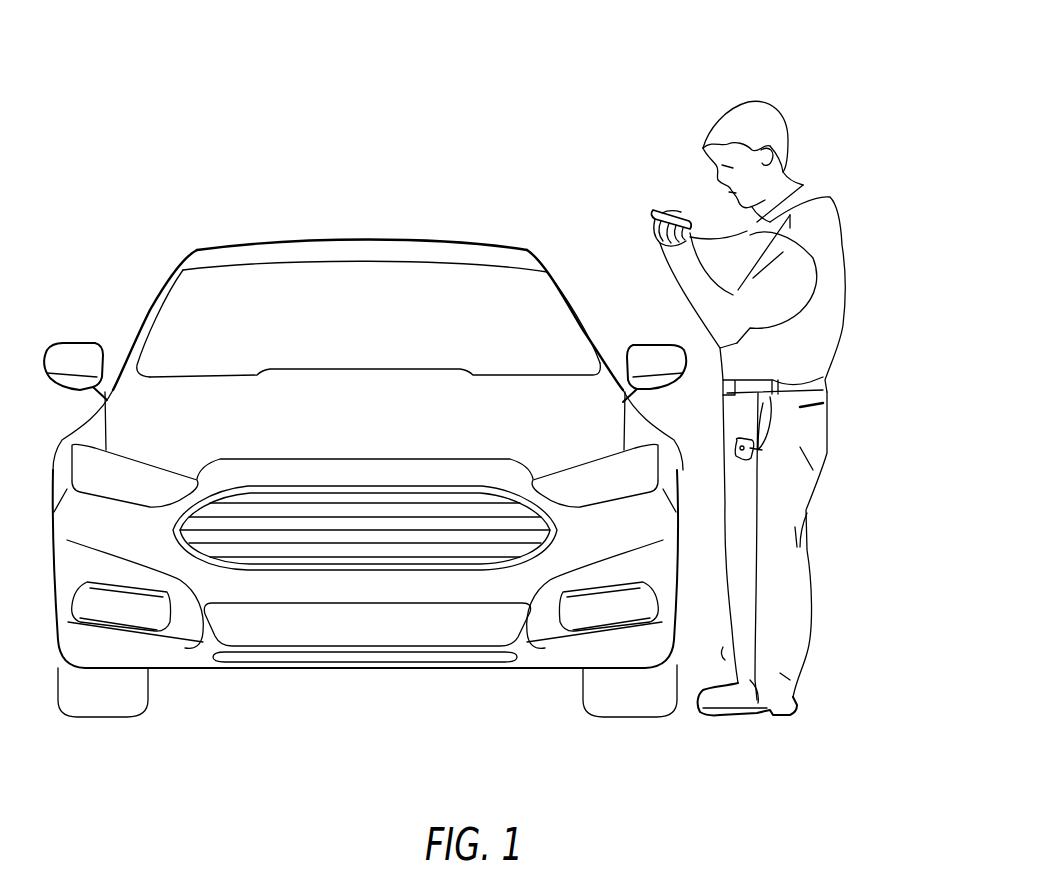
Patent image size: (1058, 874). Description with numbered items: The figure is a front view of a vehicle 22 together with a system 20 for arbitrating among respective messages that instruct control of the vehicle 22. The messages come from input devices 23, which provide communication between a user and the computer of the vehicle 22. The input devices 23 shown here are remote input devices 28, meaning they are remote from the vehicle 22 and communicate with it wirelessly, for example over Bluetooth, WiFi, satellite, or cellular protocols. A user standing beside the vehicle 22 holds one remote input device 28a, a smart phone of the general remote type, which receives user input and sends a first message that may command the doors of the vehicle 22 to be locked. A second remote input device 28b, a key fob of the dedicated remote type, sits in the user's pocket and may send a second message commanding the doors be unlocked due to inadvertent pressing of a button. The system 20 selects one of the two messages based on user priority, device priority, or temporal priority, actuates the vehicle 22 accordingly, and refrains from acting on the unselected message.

The system 20 is at (684, 70).
The vehicle 22 is at (238, 246).
The input device 23 is at (654, 210).
The remote input device 28 is at (760, 408).
The remote input device 28a is at (797, 200).
The remote input device 28b is at (752, 460).